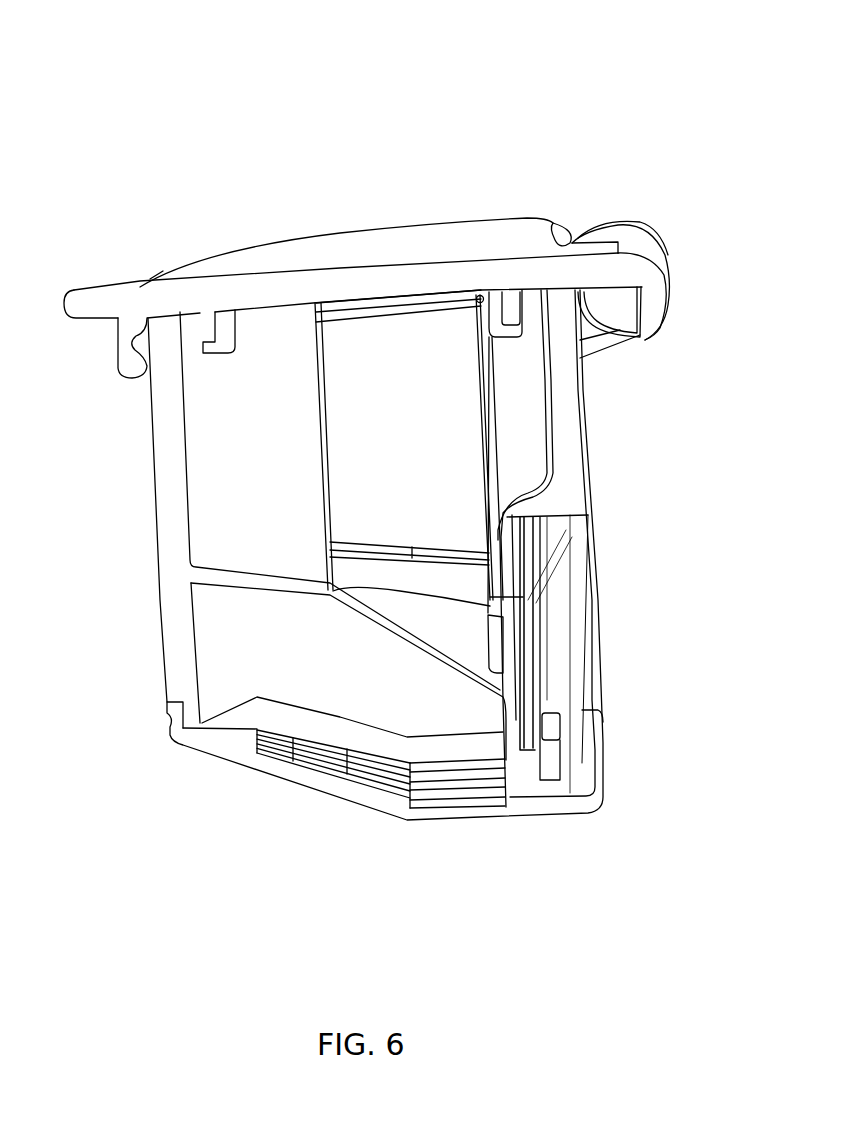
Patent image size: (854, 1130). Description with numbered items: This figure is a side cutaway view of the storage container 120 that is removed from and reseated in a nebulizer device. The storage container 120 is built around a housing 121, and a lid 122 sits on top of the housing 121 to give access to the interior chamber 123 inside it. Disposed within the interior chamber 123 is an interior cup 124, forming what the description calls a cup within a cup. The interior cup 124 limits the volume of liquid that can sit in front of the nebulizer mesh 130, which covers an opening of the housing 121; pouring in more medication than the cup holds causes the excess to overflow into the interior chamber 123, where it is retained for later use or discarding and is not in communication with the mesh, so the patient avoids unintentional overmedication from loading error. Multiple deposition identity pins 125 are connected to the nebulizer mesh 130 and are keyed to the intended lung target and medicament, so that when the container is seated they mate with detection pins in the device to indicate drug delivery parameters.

The storage container 120 is at (415, 123).
The housing 121 is at (158, 580).
The lid 122 is at (260, 245).
The interior chamber 123 is at (207, 468).
The interior cup 124 is at (480, 450).
The deposition identity pins 125 is at (392, 785).
The nebulizer mesh 130 is at (527, 657).